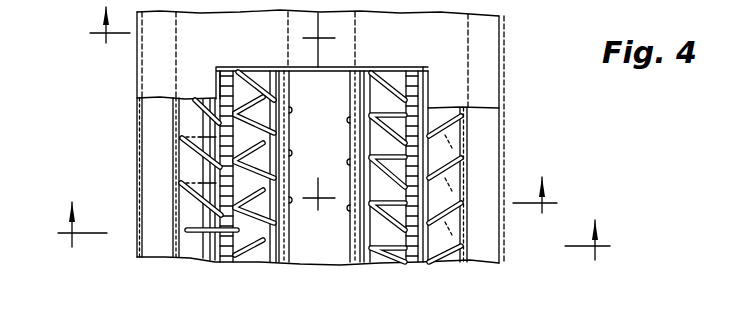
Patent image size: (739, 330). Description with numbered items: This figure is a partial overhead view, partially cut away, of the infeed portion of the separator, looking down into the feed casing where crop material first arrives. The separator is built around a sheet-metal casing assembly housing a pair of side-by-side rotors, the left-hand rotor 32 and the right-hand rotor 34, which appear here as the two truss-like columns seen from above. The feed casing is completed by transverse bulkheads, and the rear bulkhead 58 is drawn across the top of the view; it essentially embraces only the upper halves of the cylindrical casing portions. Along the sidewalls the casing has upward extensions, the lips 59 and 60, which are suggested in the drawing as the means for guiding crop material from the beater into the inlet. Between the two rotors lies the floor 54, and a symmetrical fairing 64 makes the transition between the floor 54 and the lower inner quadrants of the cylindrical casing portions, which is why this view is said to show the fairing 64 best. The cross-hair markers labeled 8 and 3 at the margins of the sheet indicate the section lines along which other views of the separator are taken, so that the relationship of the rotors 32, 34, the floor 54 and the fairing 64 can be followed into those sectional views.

The left-hand rotor 32 is at (428, 286).
The right-hand rotor 34 is at (218, 177).
The floor 54 is at (332, 245).
The rear transverse bulkhead 58 is at (358, 68).
The lip 59 is at (428, 74).
The lip 60 is at (214, 80).
The symmetrical fairing 64 is at (344, 81).
The section line 8- 8 is at (323, 117).
The section line 3- 3 is at (329, 237).